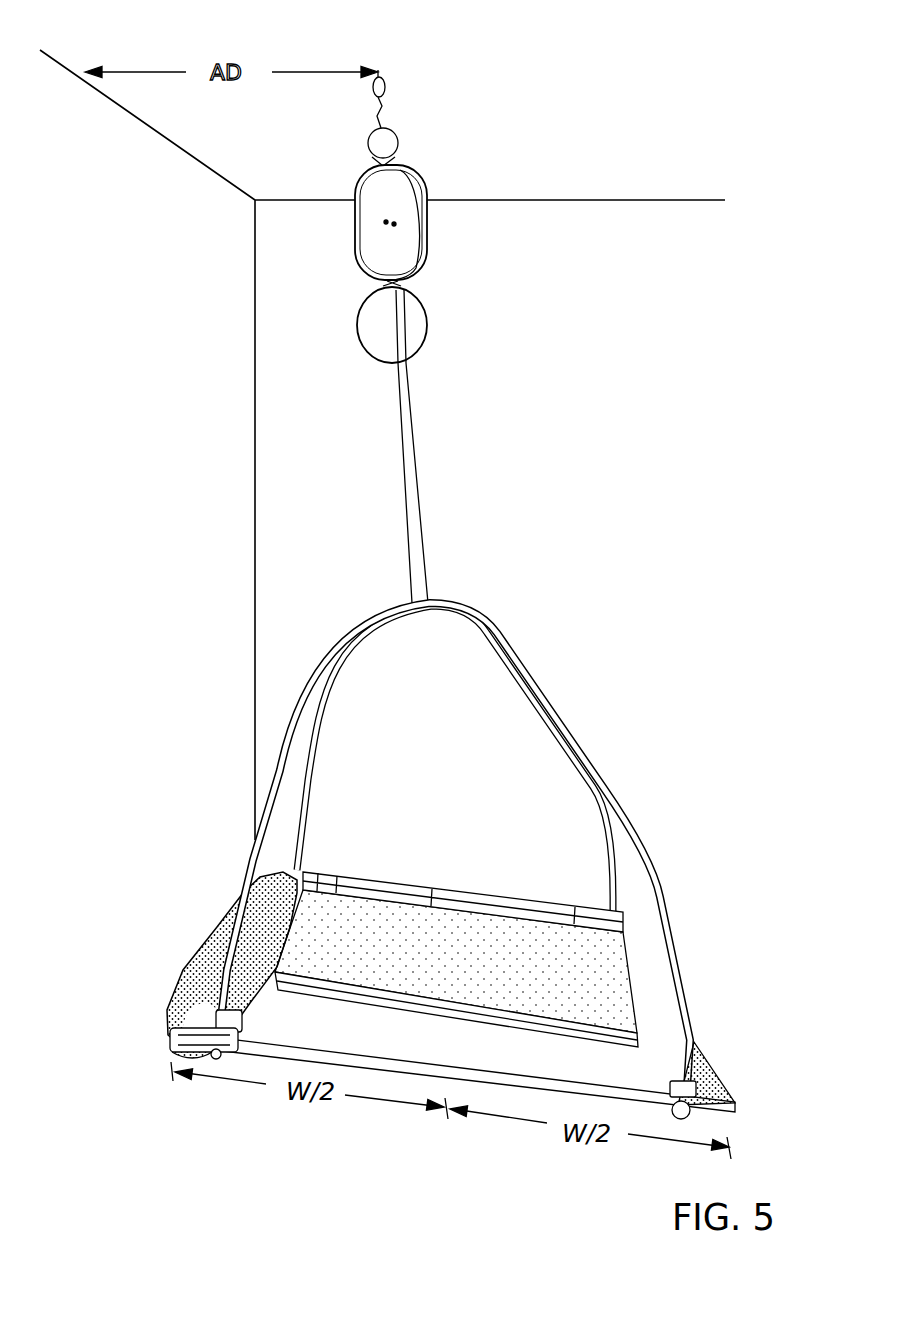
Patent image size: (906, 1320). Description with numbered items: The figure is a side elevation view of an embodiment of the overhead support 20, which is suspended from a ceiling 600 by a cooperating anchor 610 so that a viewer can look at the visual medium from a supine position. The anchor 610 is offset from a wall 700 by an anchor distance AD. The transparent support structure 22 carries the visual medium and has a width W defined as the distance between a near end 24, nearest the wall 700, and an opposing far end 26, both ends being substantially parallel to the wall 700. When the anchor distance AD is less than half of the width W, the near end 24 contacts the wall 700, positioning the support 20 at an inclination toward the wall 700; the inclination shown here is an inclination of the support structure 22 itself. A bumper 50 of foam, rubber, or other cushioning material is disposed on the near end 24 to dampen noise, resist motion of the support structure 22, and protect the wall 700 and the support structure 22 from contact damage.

The wall 700 is at (126, 397).
The anchor 610 is at (384, 78).
The ceiling 600 is at (620, 97).
The bumper 50 is at (215, 945).
The overhead support 20 is at (618, 458).
The far end 26 is at (756, 1108).
The near end 24 is at (130, 1016).
The support structure 22 is at (705, 1065).